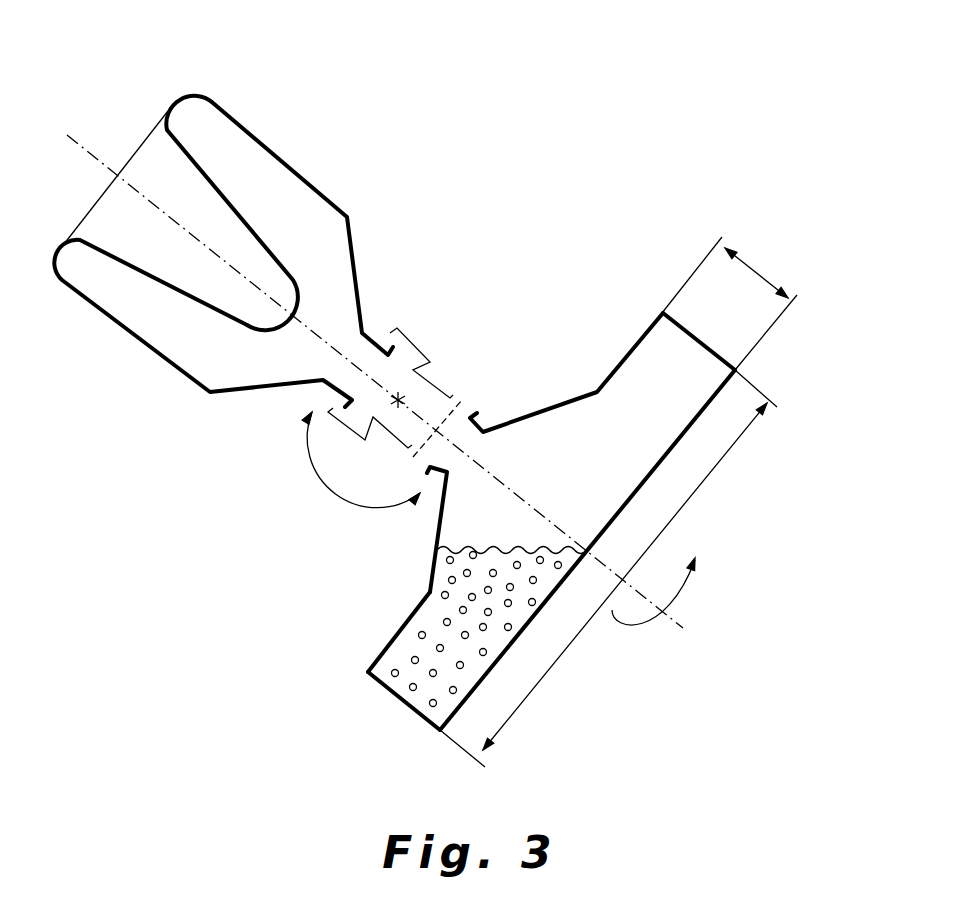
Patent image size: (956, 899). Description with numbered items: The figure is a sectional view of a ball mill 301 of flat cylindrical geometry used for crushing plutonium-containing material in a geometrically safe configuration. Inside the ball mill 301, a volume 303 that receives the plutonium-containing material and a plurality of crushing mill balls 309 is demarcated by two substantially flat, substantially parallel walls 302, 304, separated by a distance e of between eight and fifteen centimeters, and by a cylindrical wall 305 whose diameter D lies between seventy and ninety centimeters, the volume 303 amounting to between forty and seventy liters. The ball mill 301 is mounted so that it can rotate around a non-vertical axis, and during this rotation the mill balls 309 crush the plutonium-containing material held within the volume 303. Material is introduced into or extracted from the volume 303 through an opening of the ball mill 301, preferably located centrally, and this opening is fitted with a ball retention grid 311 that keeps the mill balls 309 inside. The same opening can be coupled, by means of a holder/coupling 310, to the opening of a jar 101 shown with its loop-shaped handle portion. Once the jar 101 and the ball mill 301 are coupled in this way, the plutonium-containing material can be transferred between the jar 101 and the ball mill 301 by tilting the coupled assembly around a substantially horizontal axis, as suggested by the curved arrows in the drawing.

The jar 101 is at (268, 128).
The ball mill 301 is at (740, 368).
The flat wall 302 is at (670, 452).
The volume 303 is at (500, 582).
The flat wall 304 is at (398, 630).
The cylindrical wall 305 is at (406, 704).
The crushing mill ball 309 is at (480, 625).
The holder/coupling 310 is at (408, 335).
The ball retention grid 311 is at (468, 407).